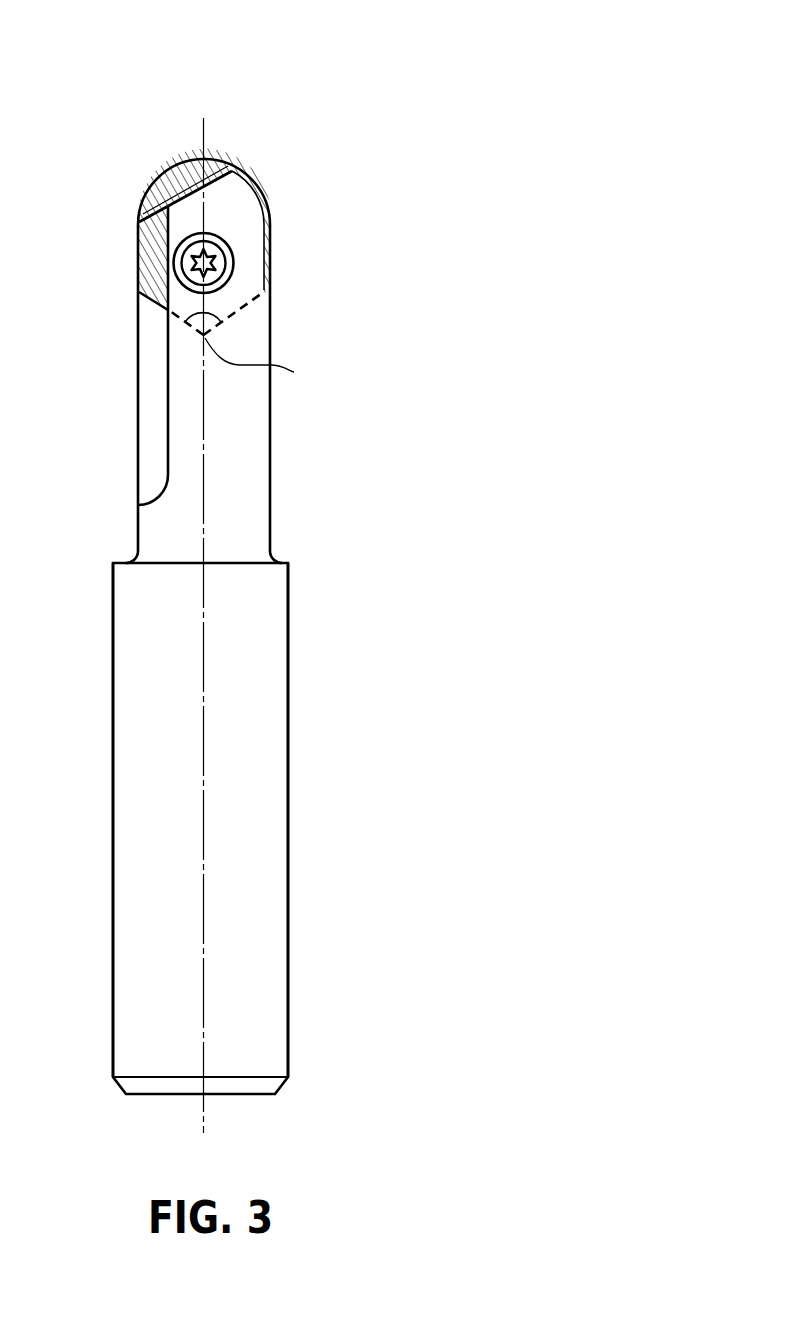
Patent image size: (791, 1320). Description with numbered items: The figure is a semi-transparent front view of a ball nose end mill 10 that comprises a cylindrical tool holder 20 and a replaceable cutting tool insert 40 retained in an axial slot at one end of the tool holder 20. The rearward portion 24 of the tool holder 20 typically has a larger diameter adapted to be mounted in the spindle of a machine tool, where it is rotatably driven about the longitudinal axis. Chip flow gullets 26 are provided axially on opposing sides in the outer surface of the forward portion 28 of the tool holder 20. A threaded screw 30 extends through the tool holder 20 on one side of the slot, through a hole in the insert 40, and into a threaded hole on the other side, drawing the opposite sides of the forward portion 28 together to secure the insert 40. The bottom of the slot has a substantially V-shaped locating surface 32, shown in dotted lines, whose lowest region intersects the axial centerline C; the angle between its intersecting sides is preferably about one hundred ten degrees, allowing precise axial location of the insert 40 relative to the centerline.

The ball nose end mill 10 is at (292, 48).
The tool holder 20 is at (268, 637).
The rearward portion 24 is at (268, 808).
The chip flow gullet 26 is at (150, 415).
The forward portion 28 is at (183, 355).
The threaded screw 30 is at (232, 240).
The V-shaped locating surface 32 is at (243, 312).
The replaceable cutting tool insert 40 is at (223, 158).